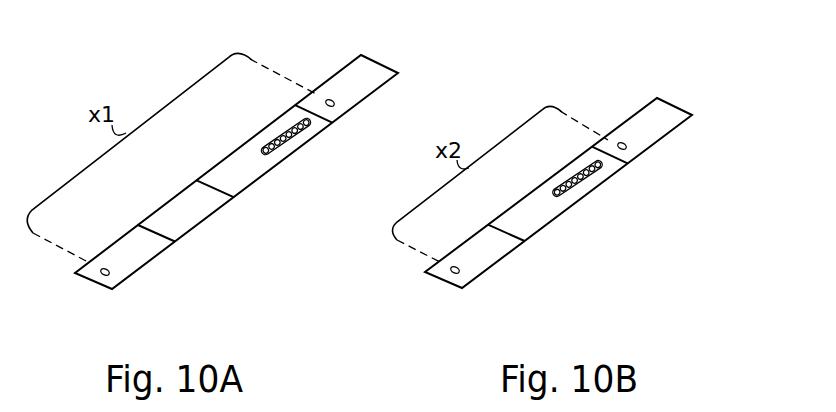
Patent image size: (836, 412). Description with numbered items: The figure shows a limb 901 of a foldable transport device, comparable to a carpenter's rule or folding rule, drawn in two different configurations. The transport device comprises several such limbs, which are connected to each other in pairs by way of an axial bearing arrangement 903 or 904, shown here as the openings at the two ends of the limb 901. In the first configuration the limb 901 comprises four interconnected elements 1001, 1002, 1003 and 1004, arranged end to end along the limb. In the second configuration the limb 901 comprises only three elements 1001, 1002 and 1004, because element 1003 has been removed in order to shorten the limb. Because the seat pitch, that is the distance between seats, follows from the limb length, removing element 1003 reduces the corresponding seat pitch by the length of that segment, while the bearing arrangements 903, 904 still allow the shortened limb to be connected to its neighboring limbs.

In FIG. 10A, the limb 901 is at (381, 62).
In FIG. 10B, the limb 901 is at (668, 102).
In FIG. 10A, the axial bearing arrangement 903 is at (102, 269).
In FIG. 10A, the axial bearing arrangement 904 is at (330, 100).
In FIG. 10A, the element 1001 is at (371, 97).
In FIG. 10B, the element 1001 is at (670, 137).
In FIG. 10A, the element 1002 is at (267, 172).
In FIG. 10B, the element 1002 is at (587, 193).
In FIG. 10A, the element 1003 is at (208, 218).
In FIG. 10A, the element 1004 is at (147, 263).
In FIG. 10B, the element 1004 is at (497, 260).